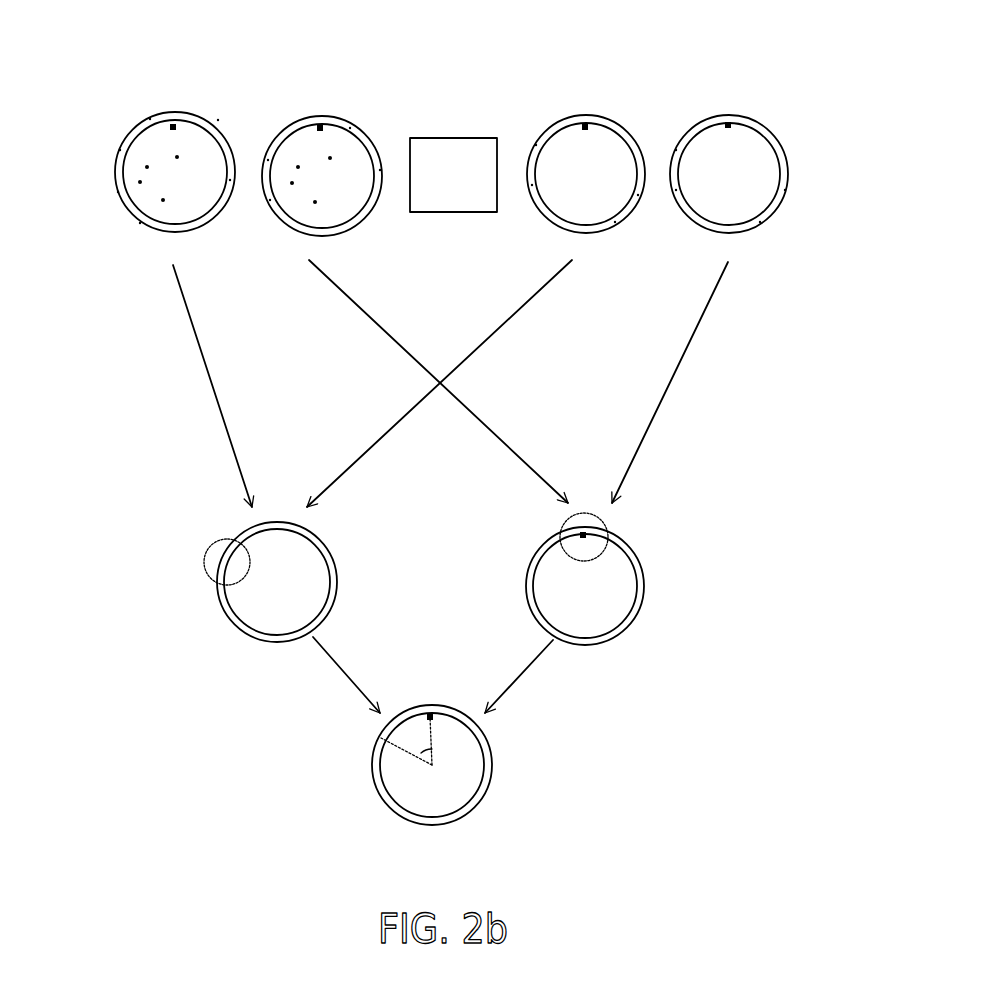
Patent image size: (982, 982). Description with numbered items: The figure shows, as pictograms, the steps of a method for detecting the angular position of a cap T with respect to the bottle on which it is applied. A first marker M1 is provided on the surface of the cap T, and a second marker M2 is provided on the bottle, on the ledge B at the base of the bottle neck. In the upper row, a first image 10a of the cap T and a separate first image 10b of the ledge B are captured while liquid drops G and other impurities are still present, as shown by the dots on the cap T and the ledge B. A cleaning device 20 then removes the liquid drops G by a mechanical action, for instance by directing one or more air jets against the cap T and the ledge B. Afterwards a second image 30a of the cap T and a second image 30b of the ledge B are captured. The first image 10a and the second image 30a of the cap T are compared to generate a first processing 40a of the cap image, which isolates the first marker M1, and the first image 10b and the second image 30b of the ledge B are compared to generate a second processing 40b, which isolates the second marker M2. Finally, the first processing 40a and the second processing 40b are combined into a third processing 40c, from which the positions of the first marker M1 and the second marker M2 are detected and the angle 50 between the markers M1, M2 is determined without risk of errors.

The first image of cap 10a is at (290, 243).
The first image of ledge 10b is at (125, 242).
The cleaning device 20 is at (455, 136).
The second image of cap 30a is at (767, 247).
The second image of ledge 30b is at (607, 250).
The first processing 40a is at (638, 640).
The second processing 40b is at (223, 653).
The third processing 40c is at (485, 825).
The angle 50 is at (416, 746).
The first marker M1 is at (173, 128).
The second marker M2 is at (121, 143).
The cap T is at (193, 140).
The liquid drops G is at (130, 210).
The ledge B is at (203, 233).